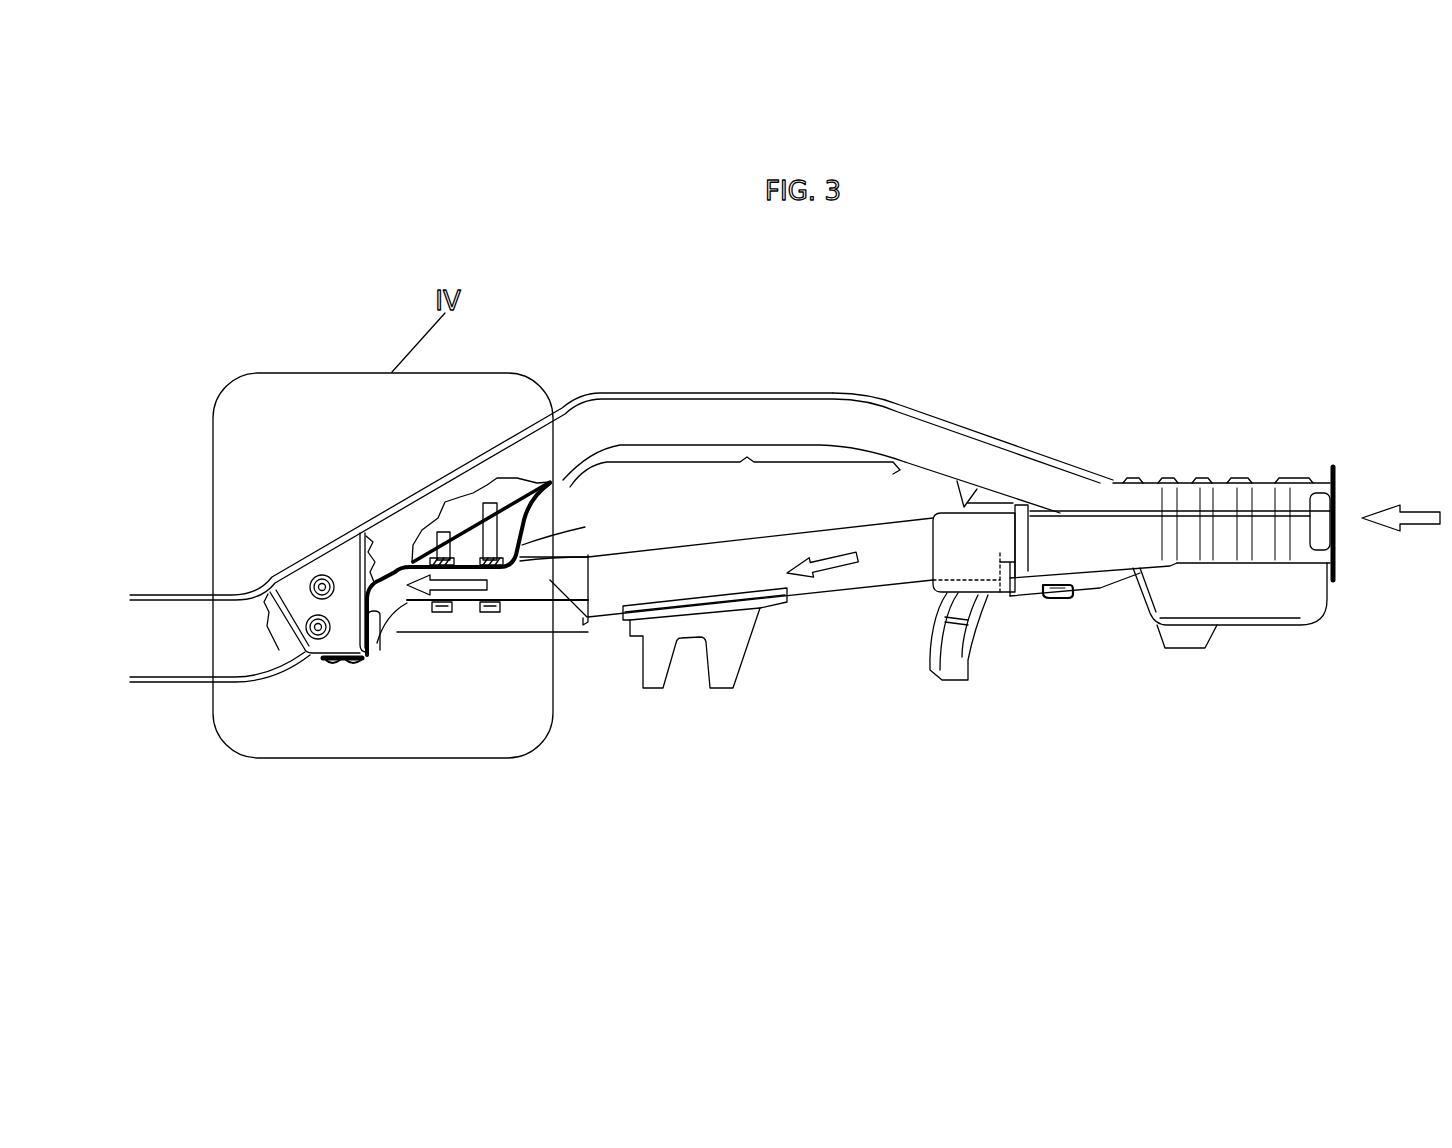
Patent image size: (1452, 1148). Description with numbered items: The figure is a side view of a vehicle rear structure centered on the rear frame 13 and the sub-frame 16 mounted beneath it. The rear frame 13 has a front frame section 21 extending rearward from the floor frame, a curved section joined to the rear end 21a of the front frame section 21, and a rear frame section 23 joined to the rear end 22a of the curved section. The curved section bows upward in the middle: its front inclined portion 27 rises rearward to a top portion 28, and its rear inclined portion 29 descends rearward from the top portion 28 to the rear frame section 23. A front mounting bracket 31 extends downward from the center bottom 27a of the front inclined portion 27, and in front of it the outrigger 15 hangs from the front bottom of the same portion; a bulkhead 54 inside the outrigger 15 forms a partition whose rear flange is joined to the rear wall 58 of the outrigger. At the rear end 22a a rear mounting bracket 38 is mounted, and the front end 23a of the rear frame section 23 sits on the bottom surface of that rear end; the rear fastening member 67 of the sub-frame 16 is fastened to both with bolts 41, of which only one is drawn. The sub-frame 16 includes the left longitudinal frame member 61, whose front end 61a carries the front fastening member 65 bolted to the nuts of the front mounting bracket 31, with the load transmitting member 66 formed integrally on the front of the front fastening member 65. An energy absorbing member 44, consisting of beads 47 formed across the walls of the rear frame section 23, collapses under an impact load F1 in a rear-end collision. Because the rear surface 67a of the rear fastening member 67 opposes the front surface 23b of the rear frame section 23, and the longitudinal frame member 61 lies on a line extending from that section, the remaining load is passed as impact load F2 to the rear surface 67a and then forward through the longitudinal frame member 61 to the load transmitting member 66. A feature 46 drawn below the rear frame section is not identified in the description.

The rear frame 13 is at (843, 387).
The front frame section 21 is at (693, 393).
The rear end of the front frame section 21a is at (263, 662).
The top portion 28 is at (777, 417).
The rear inclined portion 29 is at (926, 437).
The rear end of the curved section 22a is at (1018, 473).
The rear mounting bracket 38 is at (960, 493).
The rear surface of the rear fastening member 67a is at (1028, 527).
The energy absorbing member 44 is at (1193, 492).
The beads 47 is at (1247, 493).
The lower protrusion 46 is at (1227, 553).
The rear frame section 23 is at (1127, 548).
The front end of the rear frame section 23a is at (1047, 557).
The front surface of the rear frame section 23b is at (1013, 550).
The bolts 41 is at (1057, 594).
The rear fastening member 67 is at (957, 567).
The longitudinal frame member 61 is at (763, 560).
The front end of the left longitudinal frame member 61a is at (587, 625).
The sub-frame 16 is at (818, 600).
The front mounting bracket 31 is at (545, 541).
The front fastening member 65 is at (507, 604).
The rear wall 58 is at (369, 594).
The load transmitting member 66 is at (397, 575).
The bulkhead 54 is at (308, 591).
The outrigger 15 is at (277, 623).
The front inclined portion 27 is at (474, 473).
The center bottom of the front inclined portion 27a is at (514, 515).
The impact load F1 is at (1415, 507).
The impact load F2 is at (467, 593).